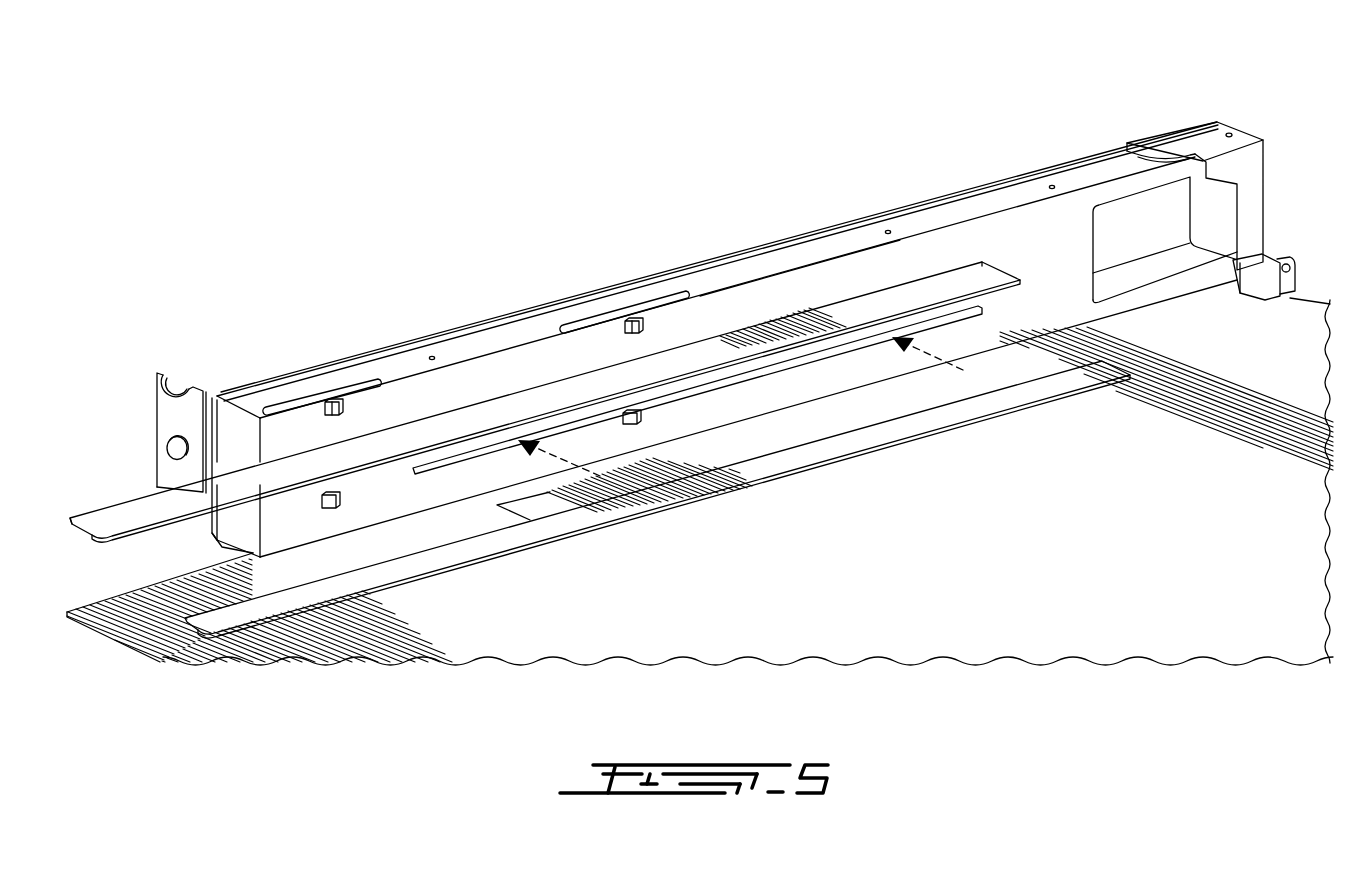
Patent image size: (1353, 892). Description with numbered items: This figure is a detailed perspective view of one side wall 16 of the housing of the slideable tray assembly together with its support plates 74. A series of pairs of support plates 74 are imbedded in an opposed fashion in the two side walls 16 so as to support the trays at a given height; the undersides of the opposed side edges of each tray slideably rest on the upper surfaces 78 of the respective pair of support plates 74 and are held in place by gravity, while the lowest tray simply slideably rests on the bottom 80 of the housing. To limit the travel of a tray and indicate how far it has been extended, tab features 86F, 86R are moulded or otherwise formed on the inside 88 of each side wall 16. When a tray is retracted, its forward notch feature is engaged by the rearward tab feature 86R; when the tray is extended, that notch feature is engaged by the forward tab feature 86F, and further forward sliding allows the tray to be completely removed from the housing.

The side wall 16 is at (408, 365).
The support plate 74 is at (647, 490).
The upper surface 78 is at (1043, 373).
The bottom 80 is at (1197, 335).
The forward tab feature 86F is at (333, 398).
The rearward tab feature 86R is at (631, 322).
The inside 88 is at (783, 292).